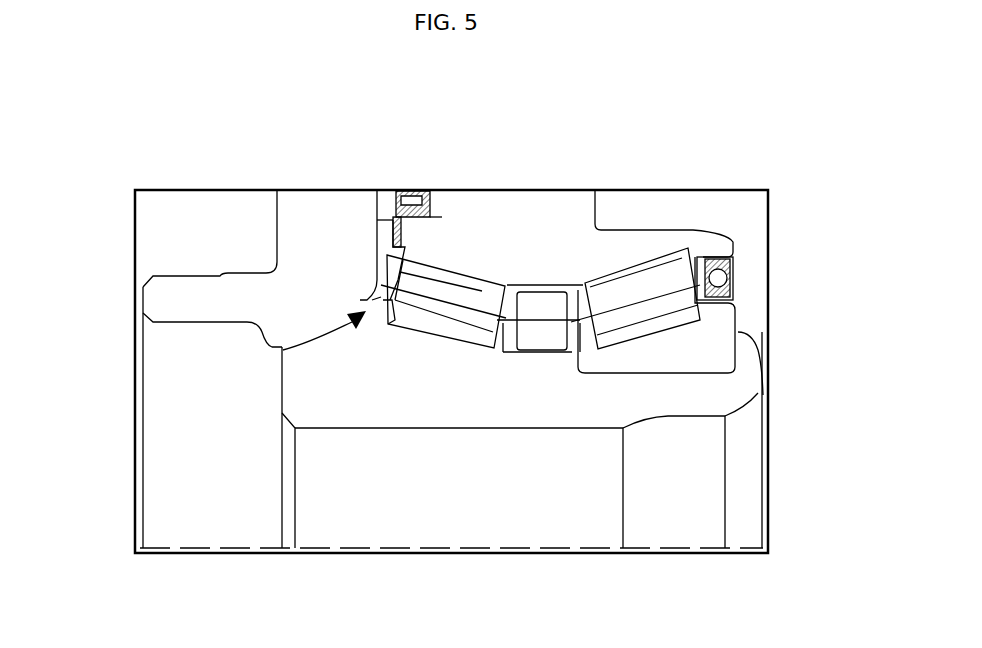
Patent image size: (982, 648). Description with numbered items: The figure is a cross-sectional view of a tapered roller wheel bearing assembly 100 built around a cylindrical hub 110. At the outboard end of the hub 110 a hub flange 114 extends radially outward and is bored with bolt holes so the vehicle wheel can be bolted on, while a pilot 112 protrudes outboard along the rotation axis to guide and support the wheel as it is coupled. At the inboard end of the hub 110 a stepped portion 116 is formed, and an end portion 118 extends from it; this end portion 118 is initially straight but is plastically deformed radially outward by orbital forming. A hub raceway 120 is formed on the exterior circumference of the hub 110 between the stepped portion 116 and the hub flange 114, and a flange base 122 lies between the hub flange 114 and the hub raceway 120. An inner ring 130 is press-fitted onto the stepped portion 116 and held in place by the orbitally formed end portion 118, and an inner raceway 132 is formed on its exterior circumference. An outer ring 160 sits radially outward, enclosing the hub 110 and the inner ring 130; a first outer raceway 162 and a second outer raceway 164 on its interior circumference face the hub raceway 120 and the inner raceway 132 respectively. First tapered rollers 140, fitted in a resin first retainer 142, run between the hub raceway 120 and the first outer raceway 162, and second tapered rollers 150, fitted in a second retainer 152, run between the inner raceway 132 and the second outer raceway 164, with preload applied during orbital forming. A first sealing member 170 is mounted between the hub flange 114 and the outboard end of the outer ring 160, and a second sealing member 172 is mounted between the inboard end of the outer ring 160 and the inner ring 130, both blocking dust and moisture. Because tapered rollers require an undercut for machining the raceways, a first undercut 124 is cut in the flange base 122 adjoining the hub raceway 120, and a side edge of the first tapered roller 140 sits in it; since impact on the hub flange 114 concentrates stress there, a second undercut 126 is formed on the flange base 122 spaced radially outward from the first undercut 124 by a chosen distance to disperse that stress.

The tapered roller wheel bearing assembly 100 is at (188, 145).
The hub 110 is at (293, 398).
The pilot 112 is at (159, 297).
The hub flange 114 is at (322, 207).
The stepped portion 116 is at (590, 300).
The end portion 118 is at (740, 372).
The hub raceway 120 is at (415, 327).
The flange base 122 is at (283, 350).
The first undercut 124 is at (387, 327).
The second undercut 126 is at (372, 300).
The inner ring 130 is at (712, 328).
The inner raceway 132 is at (673, 333).
The first tapered roller 140 is at (473, 327).
The first retainer 142 is at (472, 295).
The second tapered roller 150 is at (642, 327).
The second retainer 152 is at (625, 297).
The outer ring 160 is at (540, 213).
The first outer raceway 162 is at (445, 265).
The second outer raceway 164 is at (595, 283).
The first sealing member 170 is at (423, 192).
The second sealing member 172 is at (720, 256).